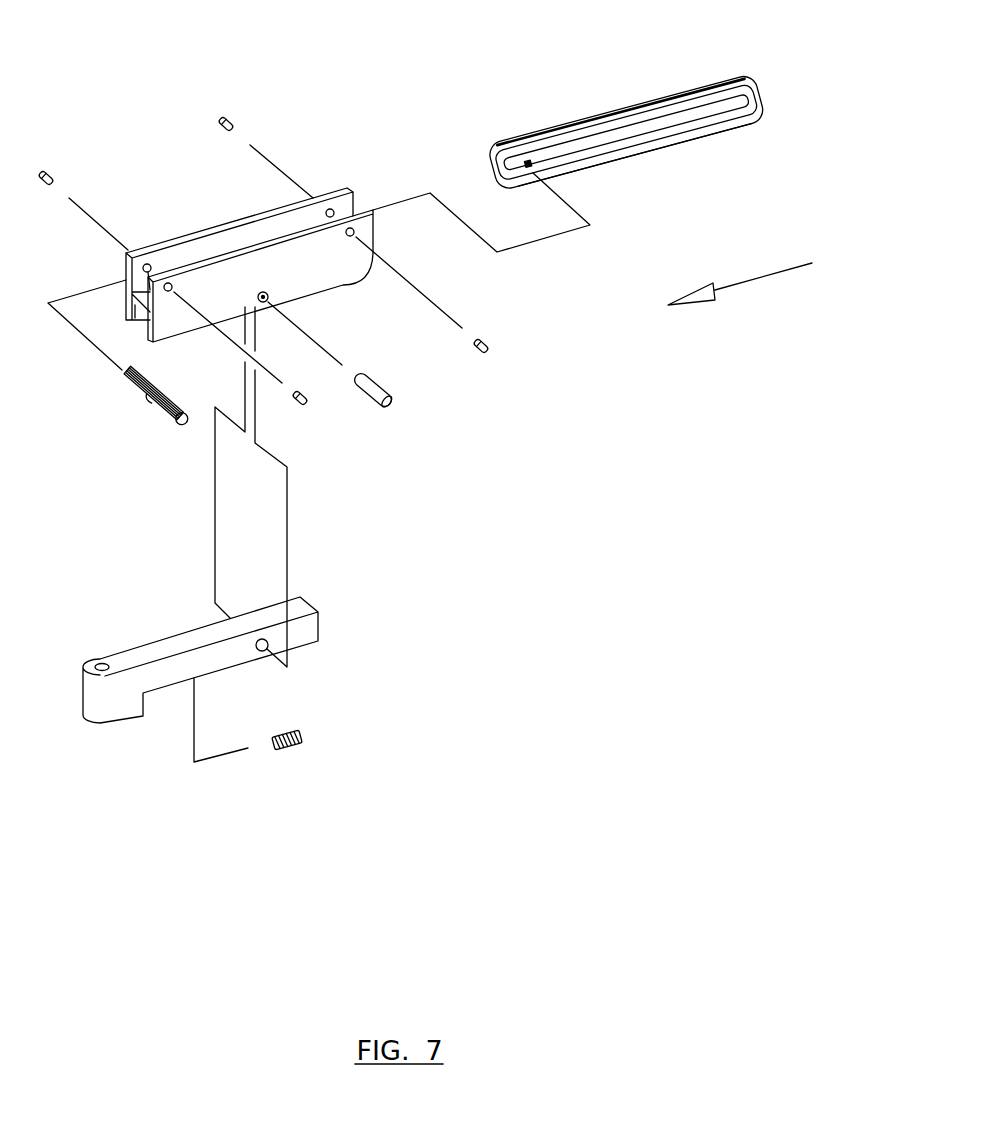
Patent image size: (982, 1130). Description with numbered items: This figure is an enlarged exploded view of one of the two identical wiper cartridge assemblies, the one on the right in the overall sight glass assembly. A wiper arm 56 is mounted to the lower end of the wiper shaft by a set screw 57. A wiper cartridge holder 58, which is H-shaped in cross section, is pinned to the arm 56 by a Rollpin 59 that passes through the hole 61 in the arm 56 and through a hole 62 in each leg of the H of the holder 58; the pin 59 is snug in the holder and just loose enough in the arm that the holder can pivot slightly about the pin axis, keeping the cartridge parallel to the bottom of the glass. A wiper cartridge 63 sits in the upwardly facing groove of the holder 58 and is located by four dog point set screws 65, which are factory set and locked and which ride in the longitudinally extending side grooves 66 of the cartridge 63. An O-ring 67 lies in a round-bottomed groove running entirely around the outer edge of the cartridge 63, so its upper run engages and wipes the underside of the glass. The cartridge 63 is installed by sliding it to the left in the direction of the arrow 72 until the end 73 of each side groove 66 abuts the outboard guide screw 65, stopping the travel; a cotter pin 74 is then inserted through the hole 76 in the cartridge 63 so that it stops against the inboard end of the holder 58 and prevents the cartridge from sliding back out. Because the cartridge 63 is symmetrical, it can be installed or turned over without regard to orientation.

The wiper arm 56 is at (158, 652).
The set screw 57 is at (300, 746).
The wiper cartridge holder 58 is at (332, 273).
The Rollpin 59 is at (388, 405).
The hole 61 is at (266, 650).
The hole 62 is at (260, 294).
The wiper cartridge 63 is at (621, 147).
The dog point set screws 65 is at (53, 168).
The side grooves 66 is at (623, 143).
The O-ring 67 is at (662, 103).
The arrow 72 is at (740, 292).
The end of side groove 73 is at (737, 110).
The cotter pin 74 is at (147, 405).
The hole 76 is at (530, 168).